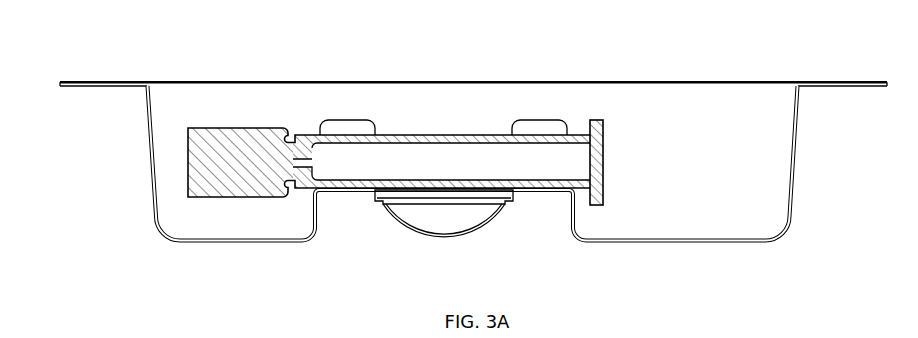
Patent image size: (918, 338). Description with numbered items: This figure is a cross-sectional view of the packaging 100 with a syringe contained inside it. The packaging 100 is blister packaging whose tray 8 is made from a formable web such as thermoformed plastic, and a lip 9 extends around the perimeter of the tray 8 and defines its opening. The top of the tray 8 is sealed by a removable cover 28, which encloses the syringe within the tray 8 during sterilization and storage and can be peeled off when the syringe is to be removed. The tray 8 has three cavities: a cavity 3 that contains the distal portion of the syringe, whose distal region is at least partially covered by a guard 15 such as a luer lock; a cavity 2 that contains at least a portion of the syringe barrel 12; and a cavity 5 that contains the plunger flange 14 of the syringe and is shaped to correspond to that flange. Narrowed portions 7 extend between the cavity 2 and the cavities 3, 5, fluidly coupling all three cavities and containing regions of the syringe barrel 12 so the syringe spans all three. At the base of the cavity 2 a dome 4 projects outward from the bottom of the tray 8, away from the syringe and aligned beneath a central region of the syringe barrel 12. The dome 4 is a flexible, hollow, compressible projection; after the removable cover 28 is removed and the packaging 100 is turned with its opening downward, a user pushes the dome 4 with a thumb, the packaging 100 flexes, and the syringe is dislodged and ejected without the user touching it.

The packaging 100 is at (457, 137).
The removable cover 28 is at (518, 81).
The lip 9 is at (60, 84).
The cavity 3 is at (168, 159).
The narrowed portions 7 is at (344, 193).
The tray 8 is at (723, 163).
The cavity 5 is at (742, 165).
The cavity 2 is at (509, 204).
The dome 4 is at (407, 224).
The guard 15 is at (246, 130).
The syringe barrel 12 is at (445, 134).
The plunger flange 14 is at (603, 160).